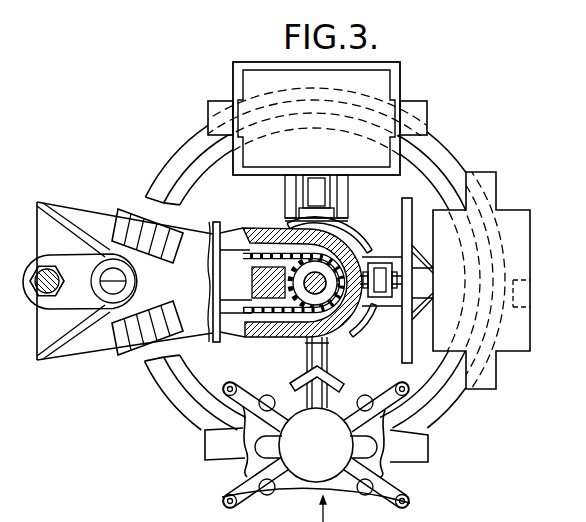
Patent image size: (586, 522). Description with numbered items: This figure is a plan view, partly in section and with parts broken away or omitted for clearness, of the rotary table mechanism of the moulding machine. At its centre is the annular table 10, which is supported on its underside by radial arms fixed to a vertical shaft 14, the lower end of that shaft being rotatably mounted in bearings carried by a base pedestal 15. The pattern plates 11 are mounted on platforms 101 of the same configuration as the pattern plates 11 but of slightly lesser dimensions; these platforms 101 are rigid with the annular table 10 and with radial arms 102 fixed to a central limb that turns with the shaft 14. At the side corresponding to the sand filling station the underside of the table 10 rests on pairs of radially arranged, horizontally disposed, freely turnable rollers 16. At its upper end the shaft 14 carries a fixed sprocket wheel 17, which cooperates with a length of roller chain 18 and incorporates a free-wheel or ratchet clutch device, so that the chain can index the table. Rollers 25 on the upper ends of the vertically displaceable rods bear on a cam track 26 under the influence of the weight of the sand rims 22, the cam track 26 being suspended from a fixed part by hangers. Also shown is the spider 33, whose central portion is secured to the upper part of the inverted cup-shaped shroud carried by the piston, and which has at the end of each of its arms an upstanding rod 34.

The annular table 10 is at (451, 411).
The pattern plates 11 is at (416, 103).
The vertical shaft 14 is at (321, 292).
The base pedestal 15 is at (88, 216).
The rollers 16 is at (172, 230).
The sprocket wheel 17 is at (326, 262).
The roller chain 18 is at (250, 236).
The sand rims 22 is at (402, 63).
The rollers 25 is at (375, 262).
The cam track 26 is at (290, 223).
The spider 33 is at (288, 483).
The upstanding rod 34 is at (232, 384).
The platforms 101 is at (418, 454).
The radial arms 102 is at (302, 371).